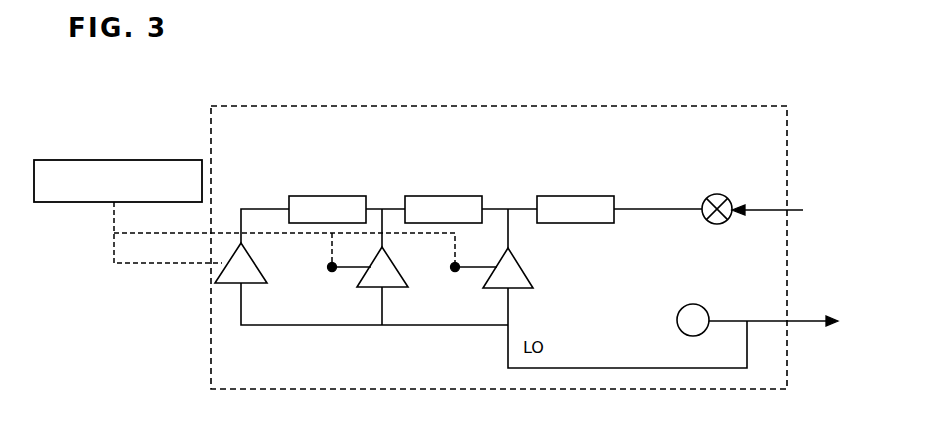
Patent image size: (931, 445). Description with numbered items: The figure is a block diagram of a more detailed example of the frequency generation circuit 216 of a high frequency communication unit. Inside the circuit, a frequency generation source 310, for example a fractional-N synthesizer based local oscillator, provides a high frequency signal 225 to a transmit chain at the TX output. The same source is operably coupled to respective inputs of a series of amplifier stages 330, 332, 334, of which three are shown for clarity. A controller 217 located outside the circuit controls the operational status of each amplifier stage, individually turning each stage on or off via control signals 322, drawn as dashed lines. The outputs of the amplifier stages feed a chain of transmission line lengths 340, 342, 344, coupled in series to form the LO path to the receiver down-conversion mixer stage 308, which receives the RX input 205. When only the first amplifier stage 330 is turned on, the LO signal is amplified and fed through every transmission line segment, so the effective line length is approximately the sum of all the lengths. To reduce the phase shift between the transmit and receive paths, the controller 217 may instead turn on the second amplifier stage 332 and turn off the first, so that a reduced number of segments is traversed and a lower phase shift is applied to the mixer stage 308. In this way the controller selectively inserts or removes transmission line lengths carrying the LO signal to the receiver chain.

The RX receive input 205 is at (803, 212).
The frequency generation circuit 216 is at (558, 102).
The controller 217 is at (127, 157).
The high frequency signal 225 is at (797, 323).
The receiver down-conversion mixer stage 308 is at (730, 193).
The frequency generation source 310 is at (674, 319).
The control signals 322 is at (162, 265).
The amplifier stage A1 330 is at (252, 283).
The amplifier stage A2 332 is at (367, 287).
The amplifier stage A3 334 is at (497, 288).
The transmission line length L1 340 is at (338, 194).
The transmission line length L2 342 is at (447, 194).
The transmission line length L3 344 is at (585, 193).